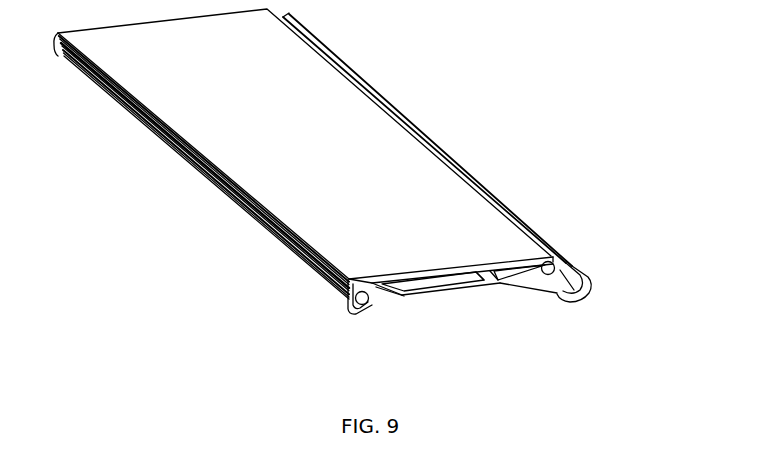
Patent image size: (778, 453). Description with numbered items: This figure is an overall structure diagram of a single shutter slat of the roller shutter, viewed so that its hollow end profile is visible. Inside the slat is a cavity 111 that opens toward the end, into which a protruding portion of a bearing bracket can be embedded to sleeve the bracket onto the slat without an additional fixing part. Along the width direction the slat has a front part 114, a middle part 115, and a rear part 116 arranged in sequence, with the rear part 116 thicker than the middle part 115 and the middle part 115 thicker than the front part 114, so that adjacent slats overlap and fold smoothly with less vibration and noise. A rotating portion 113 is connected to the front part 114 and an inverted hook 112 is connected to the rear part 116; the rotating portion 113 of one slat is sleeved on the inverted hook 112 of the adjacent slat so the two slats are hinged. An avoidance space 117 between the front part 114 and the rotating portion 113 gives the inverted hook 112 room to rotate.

The cavity 111 is at (453, 290).
The inverted hook 112 is at (590, 276).
The rotating portion 113 is at (357, 311).
The front part 114 is at (392, 282).
The middle part 115 is at (440, 268).
The rear part 116 is at (531, 291).
The avoidance space 117 is at (380, 299).